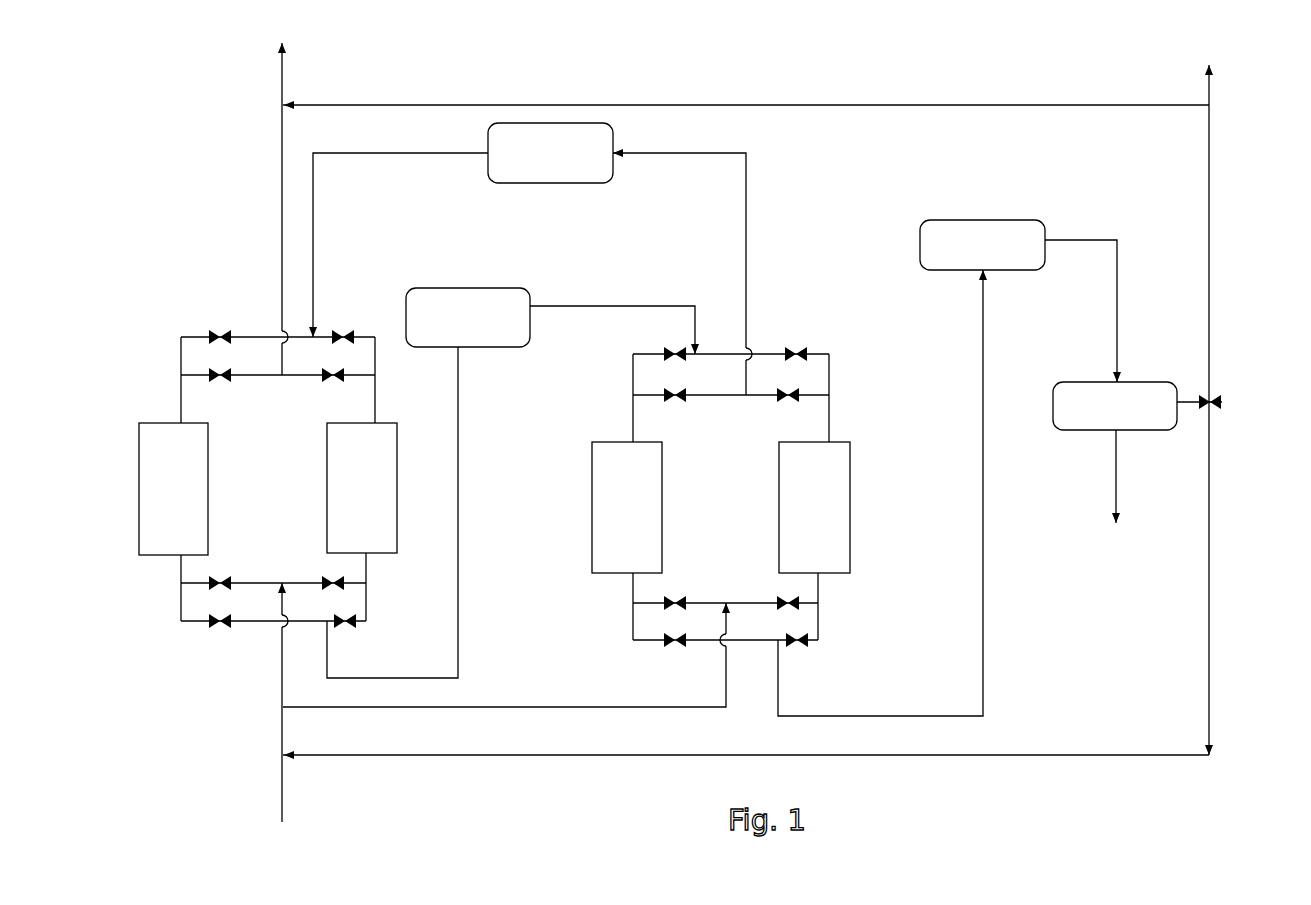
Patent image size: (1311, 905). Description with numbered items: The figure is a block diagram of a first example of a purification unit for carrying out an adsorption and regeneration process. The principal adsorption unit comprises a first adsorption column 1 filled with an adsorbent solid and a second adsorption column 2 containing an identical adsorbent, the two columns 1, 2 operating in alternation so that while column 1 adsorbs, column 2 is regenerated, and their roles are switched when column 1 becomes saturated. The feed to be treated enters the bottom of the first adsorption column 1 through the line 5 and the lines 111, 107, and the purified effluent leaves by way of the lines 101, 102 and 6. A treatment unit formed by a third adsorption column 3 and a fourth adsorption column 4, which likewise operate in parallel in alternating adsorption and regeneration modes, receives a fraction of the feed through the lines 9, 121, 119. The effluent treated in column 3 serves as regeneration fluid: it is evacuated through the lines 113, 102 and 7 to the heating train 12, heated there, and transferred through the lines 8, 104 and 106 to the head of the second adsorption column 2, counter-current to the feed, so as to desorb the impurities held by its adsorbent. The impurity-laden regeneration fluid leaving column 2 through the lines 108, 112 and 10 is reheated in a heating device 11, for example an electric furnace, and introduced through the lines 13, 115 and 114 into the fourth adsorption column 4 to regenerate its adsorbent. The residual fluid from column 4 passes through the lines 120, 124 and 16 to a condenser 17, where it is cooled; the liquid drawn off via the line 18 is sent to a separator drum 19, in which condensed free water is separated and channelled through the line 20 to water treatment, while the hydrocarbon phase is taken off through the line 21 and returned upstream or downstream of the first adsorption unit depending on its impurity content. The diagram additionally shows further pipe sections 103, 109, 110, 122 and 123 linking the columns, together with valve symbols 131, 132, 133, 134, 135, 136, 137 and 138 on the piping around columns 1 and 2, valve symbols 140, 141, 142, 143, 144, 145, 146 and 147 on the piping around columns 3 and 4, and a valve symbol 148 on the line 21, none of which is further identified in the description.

The first adsorption column 1 is at (139, 500).
The second adsorption column 2 is at (325, 450).
The third adsorption column 3 is at (592, 480).
The fourth adsorption column 4 is at (850, 478).
The line 5 is at (283, 727).
The line 6 is at (283, 198).
The line 7 is at (748, 217).
The line 8 is at (316, 226).
The line 9 is at (509, 706).
The line 10 is at (460, 596).
The heating device 11 is at (463, 288).
The heating train 12 is at (545, 183).
The line 13 is at (638, 306).
The line 16 is at (889, 716).
The condenser 17 is at (970, 220).
The line 18 is at (1110, 240).
The separator drum 19 is at (1083, 432).
The line 20 is at (1122, 458).
The line 21 is at (1185, 395).
The line 101 is at (181, 383).
The line 102 is at (252, 376).
The pipe section 103 is at (303, 377).
The line 104 is at (243, 333).
The line 106 is at (377, 393).
The line 107 is at (181, 600).
The line 108 is at (366, 593).
The pipe section 109 is at (252, 583).
The pipe section 110 is at (307, 583).
The line 111 is at (252, 625).
The line 112 is at (330, 625).
The line 113 is at (633, 403).
The line 114 is at (829, 412).
The line 115 is at (717, 352).
The line 119 is at (633, 620).
The line 120 is at (818, 608).
The line 121 is at (705, 603).
The pipe section 122 is at (755, 603).
The pipe section 123 is at (707, 645).
The line 124 is at (760, 645).
The valve 131 is at (215, 332).
The valve 132 is at (353, 327).
The valve 133 is at (230, 383).
The valve 134 is at (340, 370).
The valve 135 is at (210, 575).
The valve 136 is at (212, 630).
The valve 137 is at (357, 627).
The valve 138 is at (342, 580).
The valve 140 is at (662, 350).
The valve 141 is at (809, 347).
The valve 142 is at (690, 400).
The valve 143 is at (790, 392).
The valve 144 is at (662, 598).
The valve 145 is at (798, 603).
The valve 146 is at (660, 645).
The valve 147 is at (812, 645).
The valve 148 is at (1218, 397).